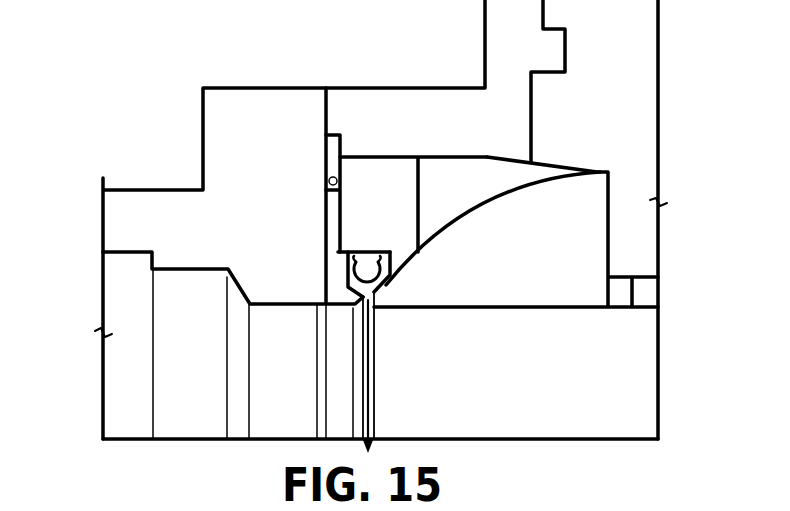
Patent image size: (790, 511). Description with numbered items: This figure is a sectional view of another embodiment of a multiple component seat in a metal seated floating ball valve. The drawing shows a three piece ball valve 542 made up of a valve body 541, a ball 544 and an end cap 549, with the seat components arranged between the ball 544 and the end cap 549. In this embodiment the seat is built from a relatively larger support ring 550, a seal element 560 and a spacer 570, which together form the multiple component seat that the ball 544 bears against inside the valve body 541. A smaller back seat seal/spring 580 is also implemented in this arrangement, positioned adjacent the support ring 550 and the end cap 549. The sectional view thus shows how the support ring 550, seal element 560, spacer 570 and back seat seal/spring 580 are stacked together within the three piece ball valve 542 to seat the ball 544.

The valve body 541 is at (629, 119).
The three piece ball valve 542 is at (206, 54).
The ball 544 is at (578, 193).
The end cap 549 is at (291, 156).
The support ring 550 is at (407, 211).
The seal element 560 is at (388, 283).
The spacer 570 is at (336, 275).
The back seat seal/spring 580 is at (326, 183).